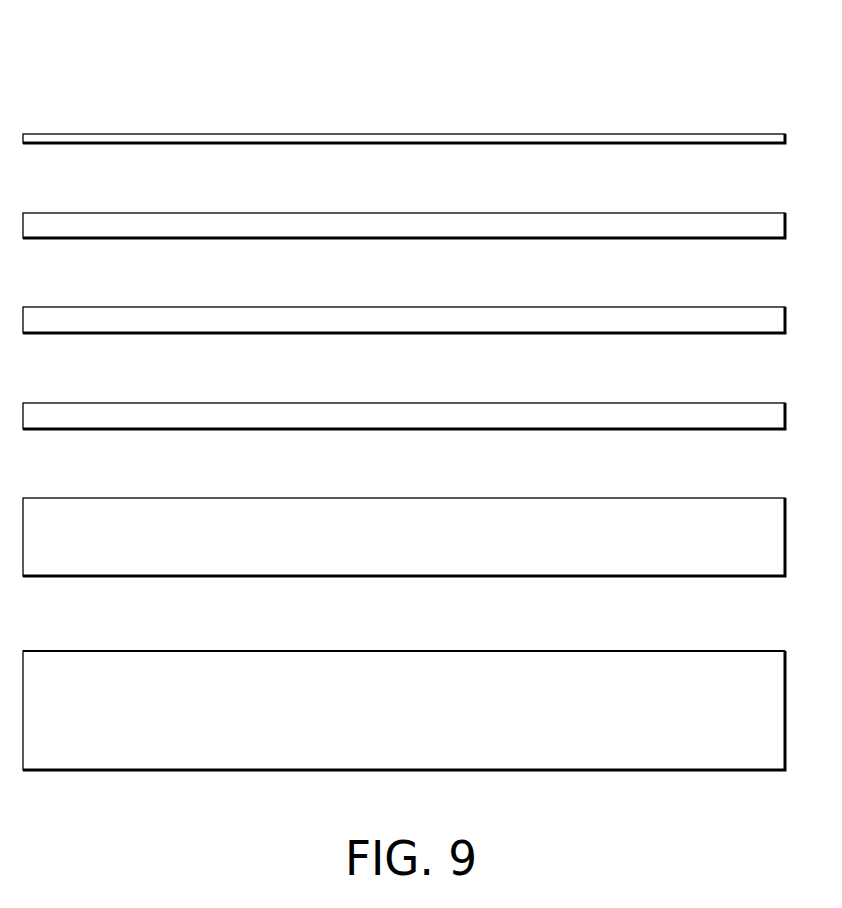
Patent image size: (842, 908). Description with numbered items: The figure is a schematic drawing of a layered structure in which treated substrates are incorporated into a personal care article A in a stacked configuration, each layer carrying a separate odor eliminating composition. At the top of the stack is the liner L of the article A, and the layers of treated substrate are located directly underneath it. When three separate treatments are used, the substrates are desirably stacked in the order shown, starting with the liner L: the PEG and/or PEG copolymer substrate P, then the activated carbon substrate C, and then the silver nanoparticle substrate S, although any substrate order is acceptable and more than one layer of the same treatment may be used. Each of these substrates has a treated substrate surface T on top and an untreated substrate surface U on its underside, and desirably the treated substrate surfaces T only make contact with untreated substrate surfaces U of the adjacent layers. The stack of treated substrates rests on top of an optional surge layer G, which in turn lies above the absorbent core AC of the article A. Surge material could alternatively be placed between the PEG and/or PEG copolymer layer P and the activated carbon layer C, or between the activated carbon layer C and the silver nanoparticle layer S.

The article A is at (121, 86).
The liner L is at (741, 135).
The PEG and/or PEG copolymer substrate P is at (741, 224).
The treated substrate surface T is at (380, 200).
The untreated substrate surface U is at (160, 254).
The activated carbon substrate C is at (741, 320).
The silver nanoparticle substrate S is at (741, 414).
The surge layer G is at (740, 509).
The absorbent core AC is at (741, 663).